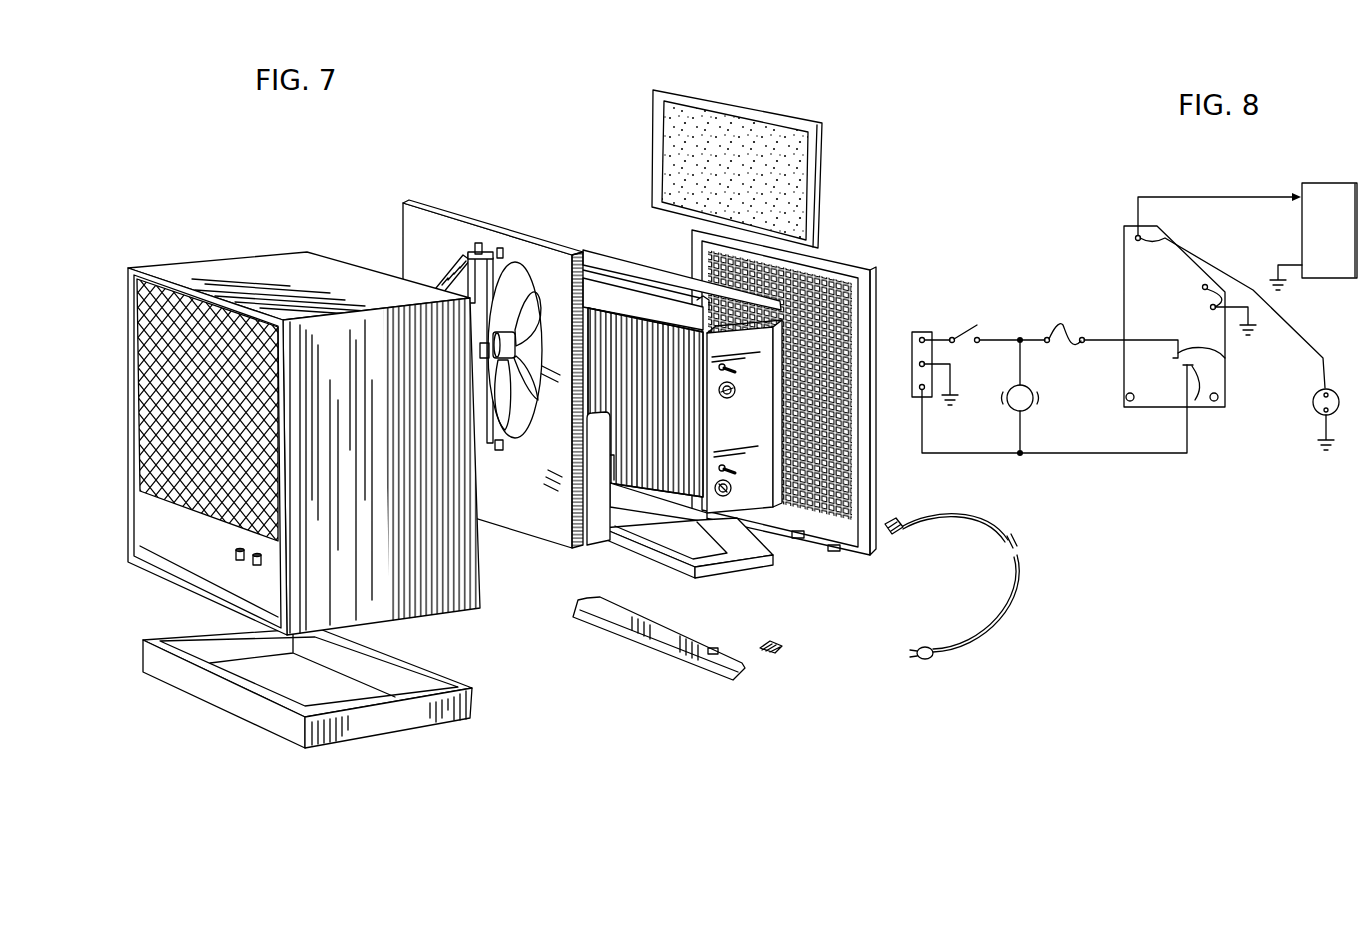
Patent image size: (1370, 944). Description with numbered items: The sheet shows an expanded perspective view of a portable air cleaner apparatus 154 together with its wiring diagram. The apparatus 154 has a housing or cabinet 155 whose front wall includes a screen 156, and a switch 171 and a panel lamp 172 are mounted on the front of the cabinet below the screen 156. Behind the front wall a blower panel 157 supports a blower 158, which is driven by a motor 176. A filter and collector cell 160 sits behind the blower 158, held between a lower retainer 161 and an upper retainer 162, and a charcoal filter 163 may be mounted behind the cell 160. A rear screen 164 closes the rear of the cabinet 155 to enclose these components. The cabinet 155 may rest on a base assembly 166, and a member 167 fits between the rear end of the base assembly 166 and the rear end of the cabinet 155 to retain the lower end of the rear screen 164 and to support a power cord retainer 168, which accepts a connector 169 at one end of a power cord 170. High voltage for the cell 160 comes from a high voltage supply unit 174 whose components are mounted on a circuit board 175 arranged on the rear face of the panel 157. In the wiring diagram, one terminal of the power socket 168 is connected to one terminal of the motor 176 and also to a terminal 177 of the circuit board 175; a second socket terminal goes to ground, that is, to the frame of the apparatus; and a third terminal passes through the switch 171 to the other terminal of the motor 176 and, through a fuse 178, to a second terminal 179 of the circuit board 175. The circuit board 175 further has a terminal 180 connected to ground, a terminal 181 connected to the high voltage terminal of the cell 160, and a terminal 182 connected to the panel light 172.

In FIG. 7, the portable air cleaner apparatus 154 is at (369, 232).
In FIG. 7, the cabinet 155 is at (233, 262).
In FIG. 7, the screen 156 is at (172, 290).
In FIG. 7, the blower panel 157 is at (424, 226).
In FIG. 7, the blower 158 is at (506, 322).
In FIG. 7, the filter and collector cell 160 is at (775, 364).
In FIG. 8, the filter and collector cell 160 is at (1322, 188).
In FIG. 7, the lower retainer 161 is at (748, 573).
In FIG. 7, the upper retainer 162 is at (603, 250).
In FIG. 7, the charcoal filter 163 is at (820, 186).
In FIG. 7, the rear screen 164 is at (875, 330).
In FIG. 7, the base assembly 166 is at (471, 690).
In FIG. 7, the member 167 is at (733, 681).
In FIG. 7, the power cord retainer 168 is at (783, 645).
In FIG. 8, the power cord retainer 168 is at (928, 332).
In FIG. 7, the connector 169 is at (898, 524).
In FIG. 7, the power cord 170 is at (960, 525).
In FIG. 7, the switch 171 is at (263, 560).
In FIG. 8, the switch 171 is at (975, 325).
In FIG. 7, the panel lamp 172 is at (232, 554).
In FIG. 8, the panel lamp 172 is at (1313, 400).
In FIG. 7, the high voltage supply unit 174 is at (618, 448).
In FIG. 7, the circuit board 175 is at (595, 514).
In FIG. 8, the circuit board 175 is at (1117, 255).
In FIG. 8, the motor 176 is at (1033, 404).
In FIG. 8, the terminal 177 is at (1195, 400).
In FIG. 8, the fuse 178 is at (1058, 327).
In FIG. 8, the second terminal 179 is at (1225, 359).
In FIG. 8, the terminal 180 is at (1230, 300).
In FIG. 8, the terminal 181 is at (1168, 238).
In FIG. 8, the terminal 182 is at (1203, 284).